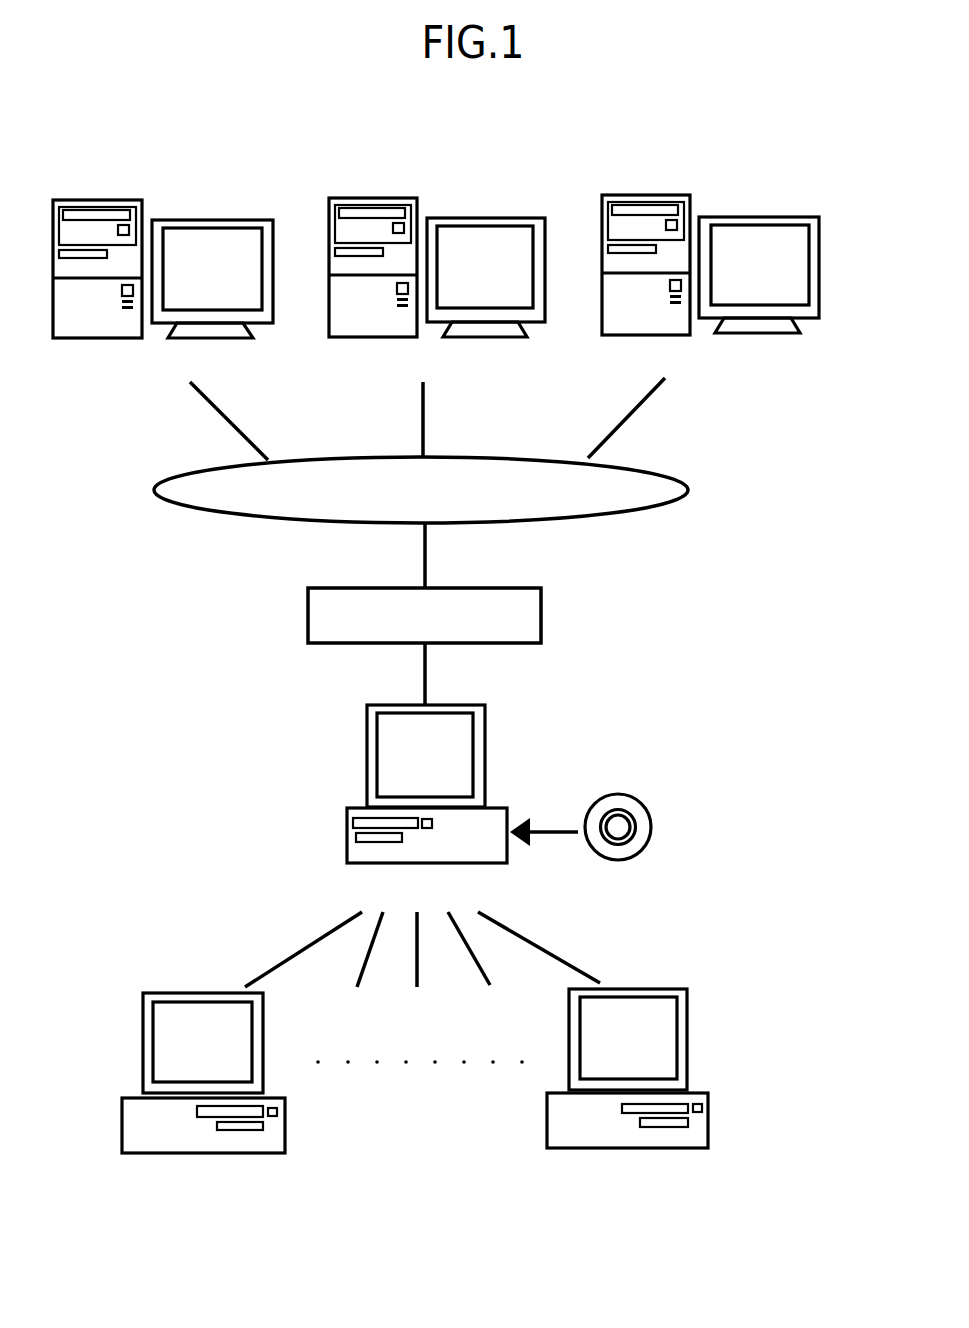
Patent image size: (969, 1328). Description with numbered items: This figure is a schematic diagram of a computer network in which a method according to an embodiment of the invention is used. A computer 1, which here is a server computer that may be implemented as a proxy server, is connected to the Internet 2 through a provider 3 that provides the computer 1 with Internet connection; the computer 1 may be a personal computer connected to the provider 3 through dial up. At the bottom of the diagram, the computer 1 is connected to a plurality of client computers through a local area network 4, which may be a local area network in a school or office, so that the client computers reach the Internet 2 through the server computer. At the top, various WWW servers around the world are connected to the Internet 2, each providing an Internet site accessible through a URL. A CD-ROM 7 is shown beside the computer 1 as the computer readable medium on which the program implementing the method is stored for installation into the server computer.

The computer 1 is at (485, 757).
The Internet 2 is at (690, 487).
The provider 3 is at (541, 612).
The local area network 4 is at (535, 944).
The CD-ROM 7 is at (651, 827).